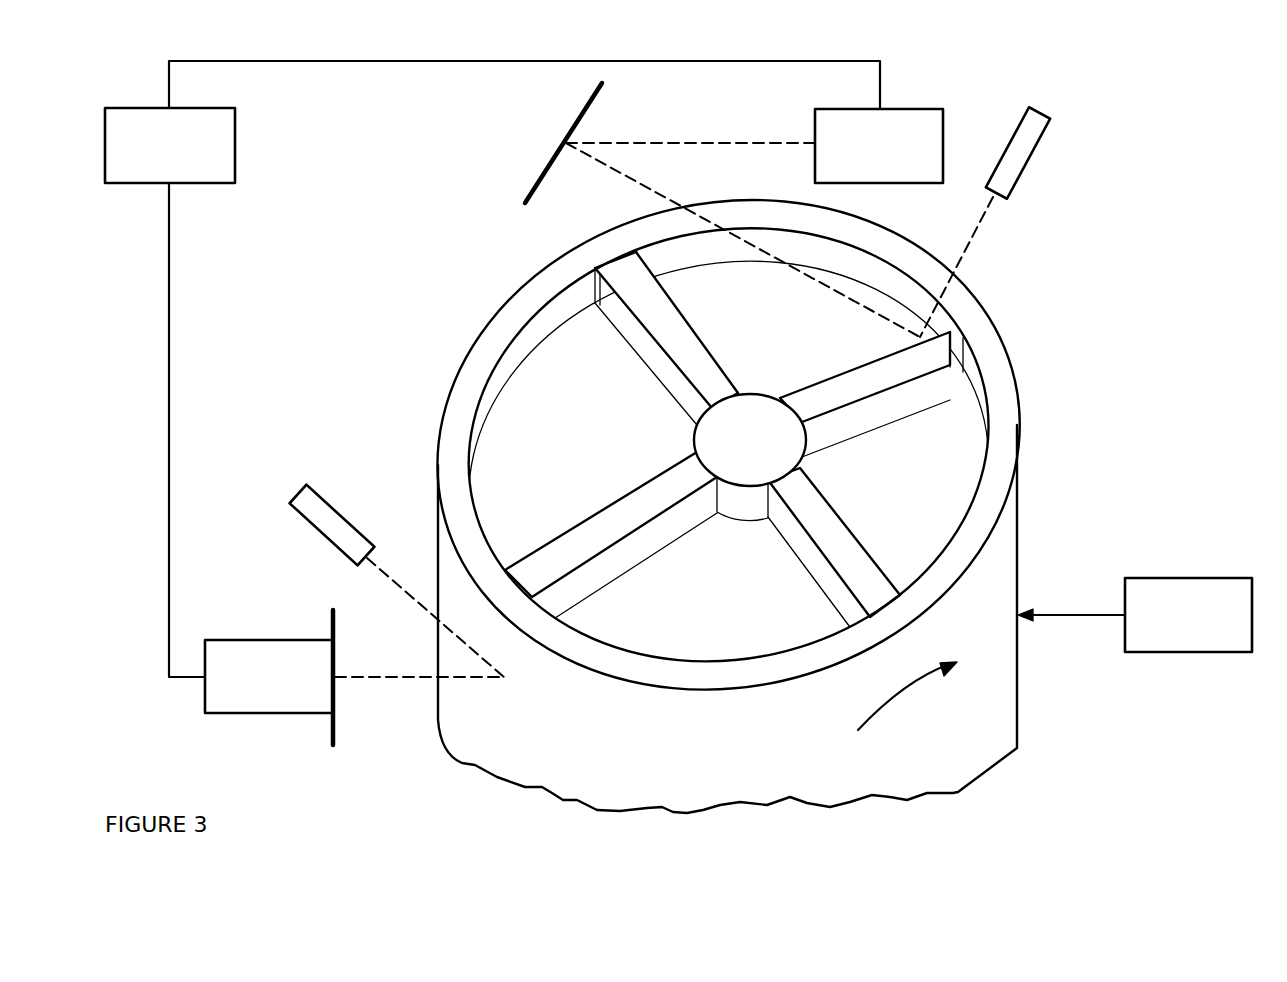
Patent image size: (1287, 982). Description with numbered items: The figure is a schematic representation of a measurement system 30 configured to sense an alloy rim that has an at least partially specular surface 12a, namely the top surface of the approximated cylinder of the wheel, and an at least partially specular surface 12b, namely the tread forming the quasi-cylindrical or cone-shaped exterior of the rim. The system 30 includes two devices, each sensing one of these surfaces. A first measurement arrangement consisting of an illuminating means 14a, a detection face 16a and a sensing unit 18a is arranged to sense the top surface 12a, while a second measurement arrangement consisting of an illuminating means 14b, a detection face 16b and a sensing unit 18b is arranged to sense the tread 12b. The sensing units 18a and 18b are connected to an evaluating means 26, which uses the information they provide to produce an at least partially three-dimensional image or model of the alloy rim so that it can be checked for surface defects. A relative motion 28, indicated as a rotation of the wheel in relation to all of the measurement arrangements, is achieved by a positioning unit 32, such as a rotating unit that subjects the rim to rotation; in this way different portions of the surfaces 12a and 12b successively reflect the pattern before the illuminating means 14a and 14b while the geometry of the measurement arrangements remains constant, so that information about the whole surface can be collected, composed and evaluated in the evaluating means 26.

The at least partially specular surface 12a is at (940, 325).
The at least partially specular surface 12b is at (455, 713).
The illuminating means 14a is at (1040, 155).
The illuminating means 14b is at (342, 515).
The detection face 16a is at (548, 163).
The detection face 16b is at (328, 735).
The sensing unit 18a is at (912, 109).
The sensing unit 18b is at (268, 640).
The evaluating means 26 is at (236, 146).
The relative motion 28 is at (906, 706).
The measurement system 30 is at (1201, 429).
The positioning unit 32 is at (1186, 578).